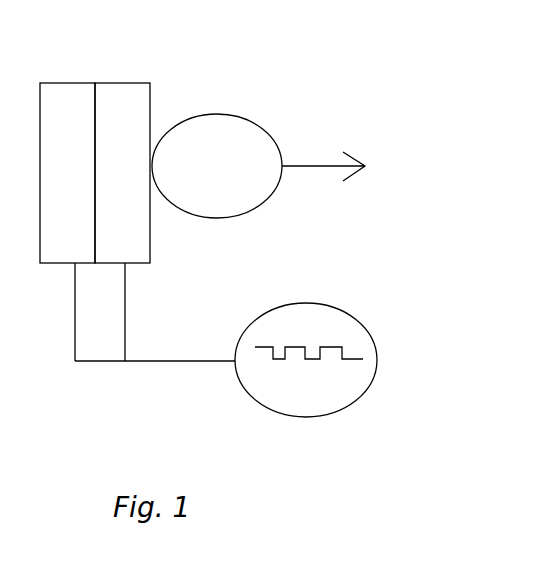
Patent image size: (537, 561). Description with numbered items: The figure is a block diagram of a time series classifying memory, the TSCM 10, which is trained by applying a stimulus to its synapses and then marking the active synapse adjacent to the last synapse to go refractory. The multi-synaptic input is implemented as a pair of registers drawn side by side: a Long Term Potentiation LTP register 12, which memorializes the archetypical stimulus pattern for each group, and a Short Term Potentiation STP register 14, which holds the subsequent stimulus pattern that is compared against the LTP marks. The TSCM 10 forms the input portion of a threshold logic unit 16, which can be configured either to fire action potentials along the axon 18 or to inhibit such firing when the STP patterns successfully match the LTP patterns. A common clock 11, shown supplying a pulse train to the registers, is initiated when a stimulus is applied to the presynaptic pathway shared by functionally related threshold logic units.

The time series classifying memory (TSCM) 10 is at (440, 68).
The common clock 11 is at (335, 415).
The LTP register 12 is at (60, 83).
The STP register 14 is at (122, 83).
The threshold logic unit 16 is at (247, 215).
The axon 18 is at (328, 164).